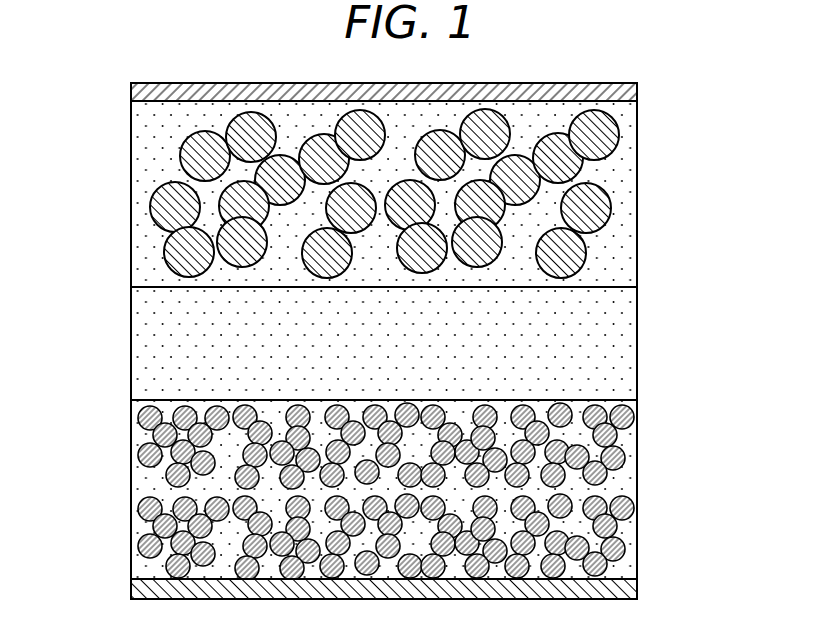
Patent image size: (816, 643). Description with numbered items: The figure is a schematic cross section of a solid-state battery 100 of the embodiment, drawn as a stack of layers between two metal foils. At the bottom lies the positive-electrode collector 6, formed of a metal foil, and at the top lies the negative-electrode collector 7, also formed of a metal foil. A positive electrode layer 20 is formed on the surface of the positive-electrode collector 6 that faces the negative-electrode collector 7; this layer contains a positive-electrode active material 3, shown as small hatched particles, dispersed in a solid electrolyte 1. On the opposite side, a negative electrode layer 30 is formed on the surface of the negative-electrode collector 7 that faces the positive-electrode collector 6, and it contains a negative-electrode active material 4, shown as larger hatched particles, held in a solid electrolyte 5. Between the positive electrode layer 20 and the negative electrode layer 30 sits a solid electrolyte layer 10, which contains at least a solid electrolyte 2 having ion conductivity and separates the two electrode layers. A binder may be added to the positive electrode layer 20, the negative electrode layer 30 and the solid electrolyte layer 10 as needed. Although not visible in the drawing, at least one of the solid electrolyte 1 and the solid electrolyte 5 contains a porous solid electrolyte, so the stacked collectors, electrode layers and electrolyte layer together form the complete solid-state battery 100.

The solid-state battery 100 is at (411, 333).
The negative electrode layer 30 is at (371, 194).
The solid electrolyte layer 10 is at (387, 343).
The positive electrode layer 20 is at (387, 490).
The negative-electrode collector 7 is at (133, 93).
The positive-electrode collector 6 is at (133, 592).
The negative-electrode active material 4 is at (148, 203).
The solid electrolyte 5 is at (148, 245).
The solid electrolyte 2 is at (147, 348).
The solid electrolyte 1 is at (147, 483).
The positive-electrode active material 3 is at (147, 547).